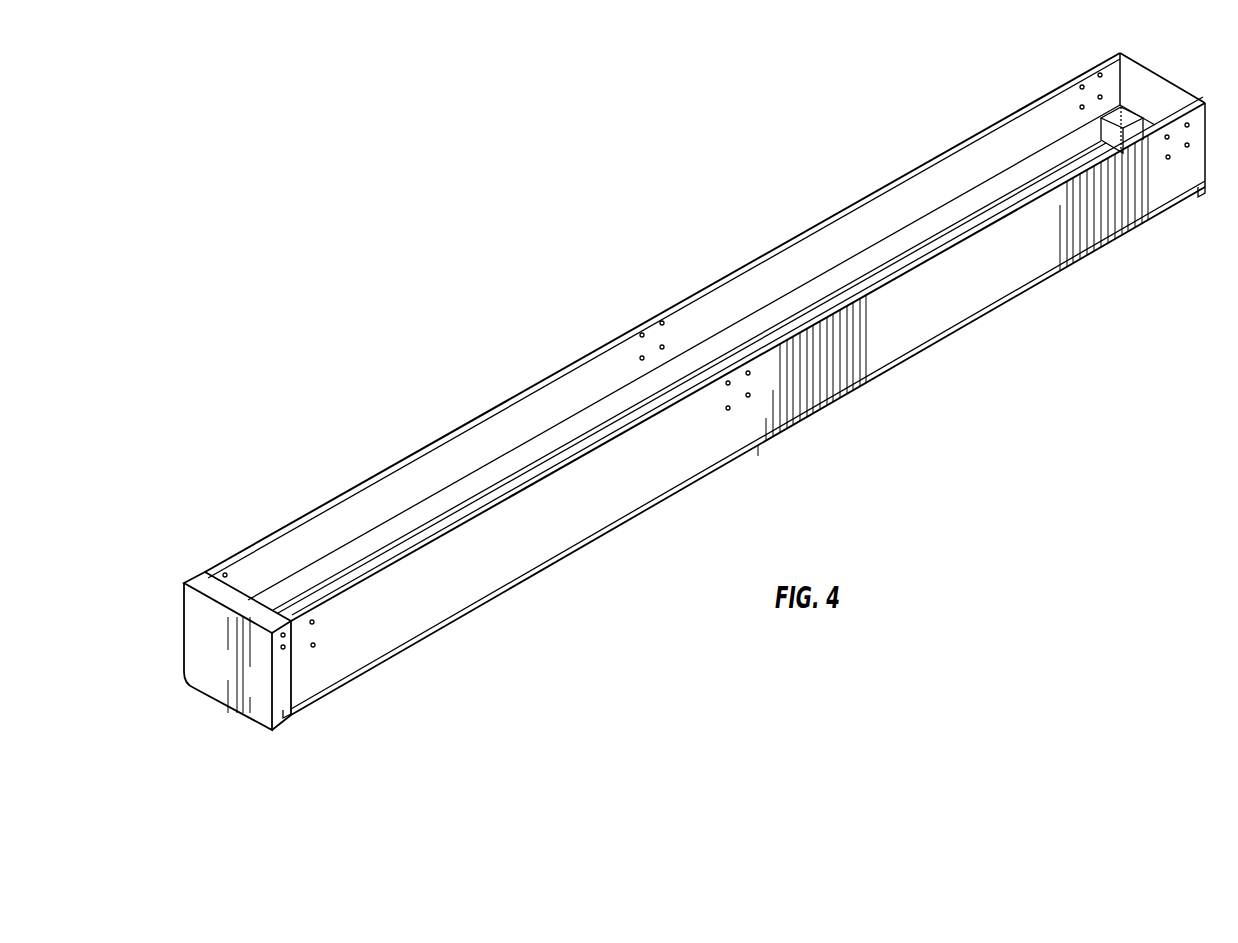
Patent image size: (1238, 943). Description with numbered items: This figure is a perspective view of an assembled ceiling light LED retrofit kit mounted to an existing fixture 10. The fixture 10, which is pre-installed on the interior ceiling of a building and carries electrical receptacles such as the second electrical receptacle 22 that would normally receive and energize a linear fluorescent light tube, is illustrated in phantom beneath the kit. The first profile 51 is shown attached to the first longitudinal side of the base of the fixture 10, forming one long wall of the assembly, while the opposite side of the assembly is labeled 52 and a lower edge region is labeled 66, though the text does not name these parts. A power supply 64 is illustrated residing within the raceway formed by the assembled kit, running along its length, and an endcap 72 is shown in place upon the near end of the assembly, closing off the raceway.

The fixture 10 is at (684, 420).
The second electrical receptacle 22 is at (1105, 128).
The first profile 51 is at (743, 407).
The rear side wall 52 is at (490, 405).
The power supply 64 is at (385, 566).
The bottom flange 66 is at (925, 355).
The endcap 72 is at (240, 693).